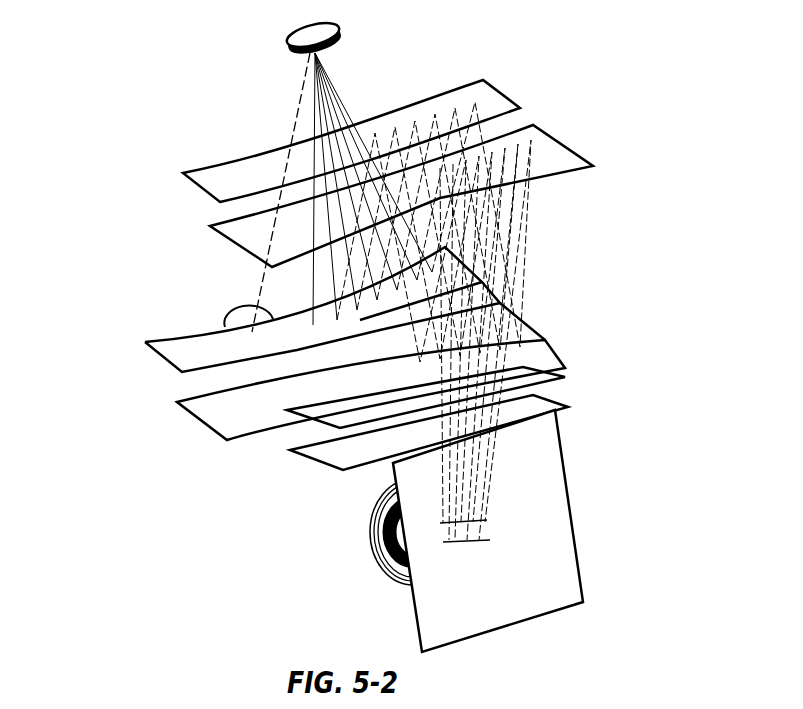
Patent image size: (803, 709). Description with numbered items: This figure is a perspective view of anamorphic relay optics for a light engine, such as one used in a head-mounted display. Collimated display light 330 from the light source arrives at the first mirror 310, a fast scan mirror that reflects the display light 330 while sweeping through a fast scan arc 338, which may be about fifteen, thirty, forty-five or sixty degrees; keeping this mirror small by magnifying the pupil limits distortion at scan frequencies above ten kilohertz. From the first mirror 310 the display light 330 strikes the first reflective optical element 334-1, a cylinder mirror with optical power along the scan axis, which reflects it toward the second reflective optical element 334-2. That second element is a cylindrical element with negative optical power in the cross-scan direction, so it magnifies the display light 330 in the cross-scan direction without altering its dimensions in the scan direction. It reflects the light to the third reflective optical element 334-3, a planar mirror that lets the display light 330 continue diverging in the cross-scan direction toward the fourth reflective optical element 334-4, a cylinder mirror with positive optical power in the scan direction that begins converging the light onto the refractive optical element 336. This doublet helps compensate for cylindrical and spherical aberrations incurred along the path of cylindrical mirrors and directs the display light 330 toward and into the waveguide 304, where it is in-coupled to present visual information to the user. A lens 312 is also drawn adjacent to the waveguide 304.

The waveguide 304 is at (423, 592).
The first mirror 310 is at (294, 36).
The lens 312 is at (375, 545).
The display light 330 is at (253, 292).
The first reflective optical element 334-1 is at (157, 352).
The second reflective optical element 334-2 is at (502, 94).
The third reflective optical element 334-3 is at (192, 414).
The fourth reflective optical element 334-4 is at (560, 143).
The refractive optical element 336 is at (360, 457).
The fast scan arc 338 is at (337, 118).